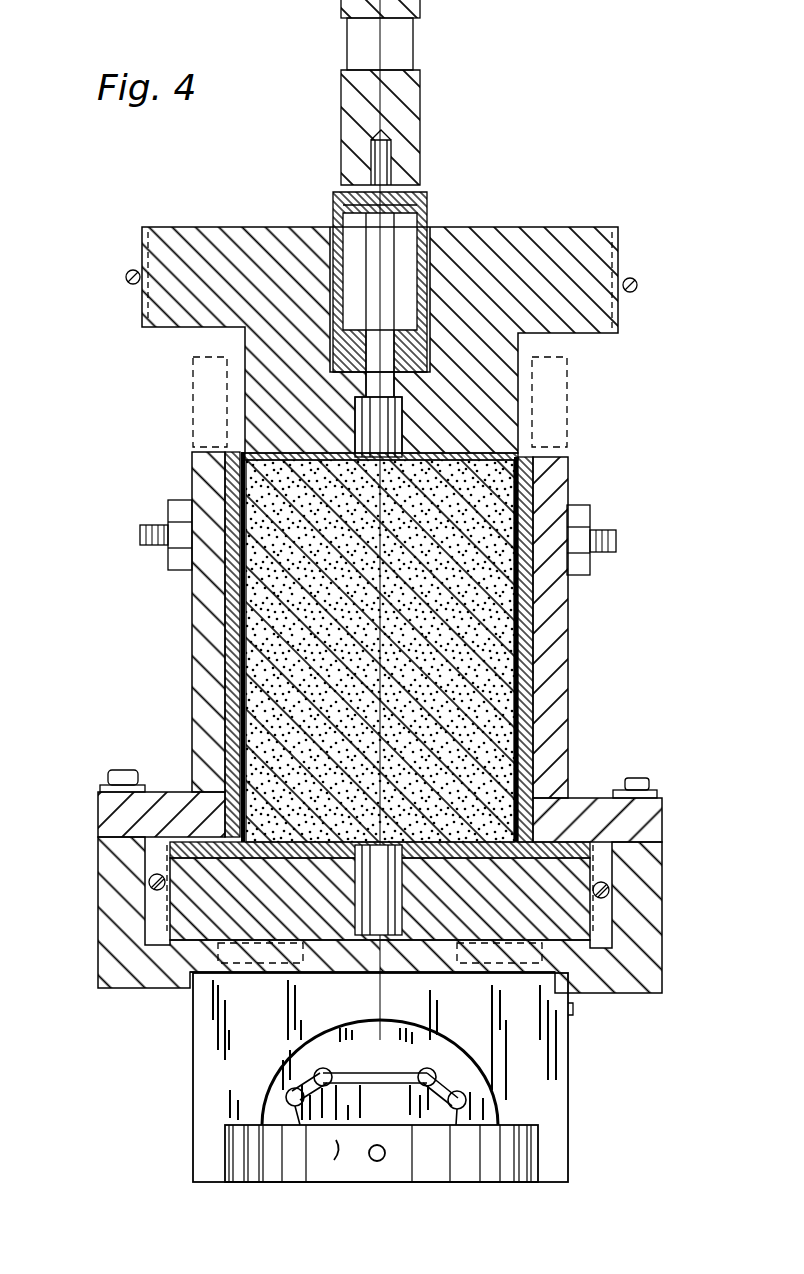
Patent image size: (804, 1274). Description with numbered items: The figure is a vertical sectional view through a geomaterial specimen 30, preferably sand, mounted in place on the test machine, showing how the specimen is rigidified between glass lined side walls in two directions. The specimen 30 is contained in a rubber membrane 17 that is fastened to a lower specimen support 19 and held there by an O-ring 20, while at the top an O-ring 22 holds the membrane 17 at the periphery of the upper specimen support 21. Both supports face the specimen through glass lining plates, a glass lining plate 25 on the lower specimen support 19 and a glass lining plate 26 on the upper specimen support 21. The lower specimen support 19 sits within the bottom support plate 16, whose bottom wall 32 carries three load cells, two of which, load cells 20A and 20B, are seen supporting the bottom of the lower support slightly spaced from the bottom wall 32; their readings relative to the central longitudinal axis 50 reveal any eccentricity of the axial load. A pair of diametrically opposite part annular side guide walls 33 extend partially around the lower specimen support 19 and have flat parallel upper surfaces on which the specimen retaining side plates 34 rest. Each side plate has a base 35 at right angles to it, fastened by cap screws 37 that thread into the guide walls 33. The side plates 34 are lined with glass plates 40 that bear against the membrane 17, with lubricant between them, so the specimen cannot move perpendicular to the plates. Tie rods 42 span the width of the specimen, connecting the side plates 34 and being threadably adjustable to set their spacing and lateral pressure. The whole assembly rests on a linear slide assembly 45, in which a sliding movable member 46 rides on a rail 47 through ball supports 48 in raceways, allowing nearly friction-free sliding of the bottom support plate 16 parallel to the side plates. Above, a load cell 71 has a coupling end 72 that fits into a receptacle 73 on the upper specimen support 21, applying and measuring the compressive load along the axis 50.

The bottom support plate 16 is at (650, 960).
The rubber membrane 17 is at (520, 672).
The lower specimen support 19 is at (560, 864).
The O-ring 20 is at (570, 888).
The load cell 20A is at (482, 962).
The load cell 20B is at (290, 962).
The upper specimen support 21 is at (530, 235).
The O-ring 22 is at (638, 286).
The glass lining plate 25 is at (555, 845).
The glass lining plate 26 is at (525, 458).
The specimen 30 is at (505, 613).
The bottom wall 32 is at (610, 995).
The side guide walls 33 is at (112, 890).
The specimen retaining side plates 34 is at (200, 673).
The bases 35 is at (642, 812).
The cap screws 37 is at (638, 786).
The glass plates 40 is at (232, 598).
The tie rods 42 is at (160, 530).
The linear slide assembly 45 is at (215, 1090).
The sliding movable member 46 is at (547, 1130).
The rail 47 is at (355, 1155).
The ball supports 48 is at (338, 1068).
The central longitudinal axis 50 is at (378, 42).
The load cell 71 is at (410, 42).
The coupling end 72 is at (336, 212).
The receptacle 73 is at (430, 233).